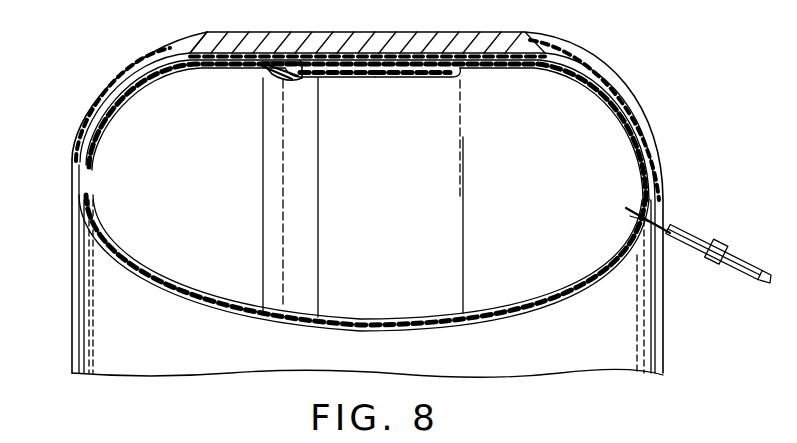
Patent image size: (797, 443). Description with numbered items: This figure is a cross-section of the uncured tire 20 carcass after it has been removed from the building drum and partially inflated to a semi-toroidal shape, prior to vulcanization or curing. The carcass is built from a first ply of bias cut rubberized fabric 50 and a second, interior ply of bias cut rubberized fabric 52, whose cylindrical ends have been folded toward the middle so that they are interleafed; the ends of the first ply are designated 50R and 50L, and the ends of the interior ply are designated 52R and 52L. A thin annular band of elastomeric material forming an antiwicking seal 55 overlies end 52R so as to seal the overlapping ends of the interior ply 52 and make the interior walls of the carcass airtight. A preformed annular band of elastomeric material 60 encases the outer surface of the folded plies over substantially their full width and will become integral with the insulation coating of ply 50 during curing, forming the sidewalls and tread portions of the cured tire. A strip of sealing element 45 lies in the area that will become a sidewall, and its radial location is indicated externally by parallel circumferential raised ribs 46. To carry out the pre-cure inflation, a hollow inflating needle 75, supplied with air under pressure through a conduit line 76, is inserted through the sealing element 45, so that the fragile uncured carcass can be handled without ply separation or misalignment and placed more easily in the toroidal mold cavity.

The tire 20 is at (84, 100).
The annular band of elastomeric material 60 is at (72, 158).
The first ply of bias cut rubberized fabric 50 is at (216, 314).
The right end of first fabric ply 50R is at (290, 54).
The left end of first fabric ply 50L is at (435, 54).
The second ply of bias cut rubberized fabric 52 is at (196, 290).
The right end of interior fabric ply 52R is at (335, 76).
The left end of interior fabric ply 52L is at (441, 74).
The antiwicking seal 55 is at (270, 78).
The sealing element 45 is at (637, 212).
The circumferential raised ribs 46 is at (638, 337).
The hollow inflating needle 75 is at (696, 241).
The conduit line 76 is at (752, 278).